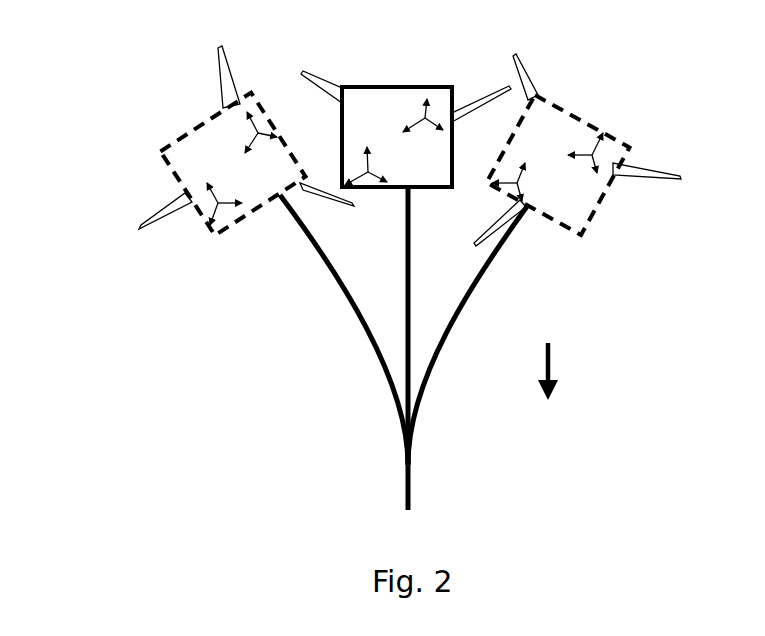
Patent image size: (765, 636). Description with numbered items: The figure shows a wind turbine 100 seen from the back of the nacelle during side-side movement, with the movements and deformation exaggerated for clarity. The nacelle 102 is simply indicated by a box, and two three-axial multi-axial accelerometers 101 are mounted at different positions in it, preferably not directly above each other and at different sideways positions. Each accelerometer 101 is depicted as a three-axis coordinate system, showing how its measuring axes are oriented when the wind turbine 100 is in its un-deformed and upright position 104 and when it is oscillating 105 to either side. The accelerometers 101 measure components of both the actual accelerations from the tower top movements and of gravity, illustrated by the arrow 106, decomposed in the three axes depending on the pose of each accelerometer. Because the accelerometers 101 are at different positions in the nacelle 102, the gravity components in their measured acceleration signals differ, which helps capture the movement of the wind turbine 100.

The wind turbine 100 is at (127, 93).
The multi-axial accelerometers 101 is at (368, 175).
The nacelle 102 is at (580, 120).
The un-deformed and upright position 104 is at (395, 255).
The oscillating position 105 is at (467, 293).
The gravity arrow 106 is at (552, 363).